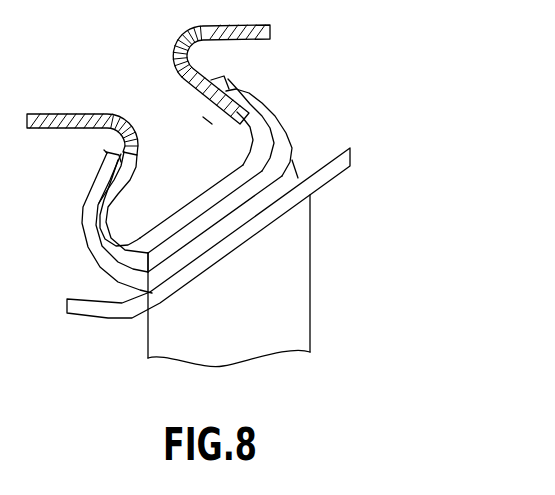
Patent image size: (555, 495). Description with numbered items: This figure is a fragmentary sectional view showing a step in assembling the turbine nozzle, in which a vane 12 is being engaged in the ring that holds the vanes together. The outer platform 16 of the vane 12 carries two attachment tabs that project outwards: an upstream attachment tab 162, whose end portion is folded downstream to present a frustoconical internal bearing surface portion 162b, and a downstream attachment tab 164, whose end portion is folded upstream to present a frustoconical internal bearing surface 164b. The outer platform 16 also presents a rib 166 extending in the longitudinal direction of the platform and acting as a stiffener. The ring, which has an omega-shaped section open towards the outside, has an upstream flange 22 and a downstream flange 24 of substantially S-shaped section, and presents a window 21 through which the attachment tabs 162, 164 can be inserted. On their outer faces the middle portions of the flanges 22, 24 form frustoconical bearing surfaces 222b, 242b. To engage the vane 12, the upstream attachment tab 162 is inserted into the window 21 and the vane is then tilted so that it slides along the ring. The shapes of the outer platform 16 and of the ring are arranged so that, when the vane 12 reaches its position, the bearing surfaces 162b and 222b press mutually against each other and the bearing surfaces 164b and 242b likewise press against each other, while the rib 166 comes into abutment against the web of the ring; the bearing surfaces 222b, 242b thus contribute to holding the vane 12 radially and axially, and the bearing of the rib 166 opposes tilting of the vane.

The vane 12 is at (250, 350).
The outer platform 16 is at (215, 250).
The window 21 is at (207, 195).
The upstream flange 22 is at (112, 113).
The downstream flange 24 is at (172, 67).
The upstream attachment tab 162 is at (92, 240).
The frustoconical internal bearing surface portion 162b is at (120, 185).
The downstream attachment tab 164 is at (272, 113).
The frustoconical internal bearing surface 164b is at (203, 117).
The rib 166 is at (235, 200).
The bearing surface 222b is at (104, 180).
The bearing surface 242b is at (227, 80).